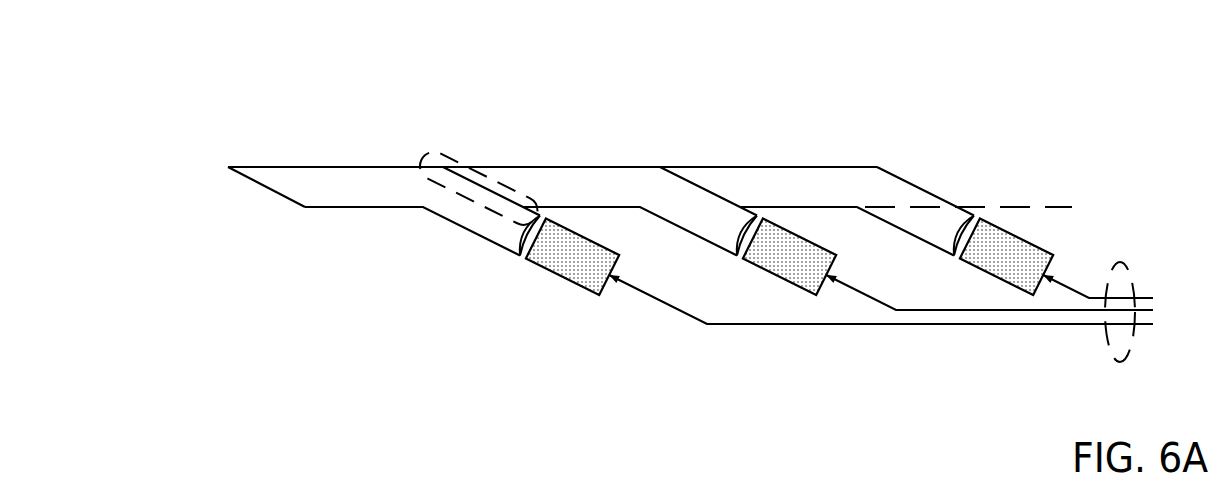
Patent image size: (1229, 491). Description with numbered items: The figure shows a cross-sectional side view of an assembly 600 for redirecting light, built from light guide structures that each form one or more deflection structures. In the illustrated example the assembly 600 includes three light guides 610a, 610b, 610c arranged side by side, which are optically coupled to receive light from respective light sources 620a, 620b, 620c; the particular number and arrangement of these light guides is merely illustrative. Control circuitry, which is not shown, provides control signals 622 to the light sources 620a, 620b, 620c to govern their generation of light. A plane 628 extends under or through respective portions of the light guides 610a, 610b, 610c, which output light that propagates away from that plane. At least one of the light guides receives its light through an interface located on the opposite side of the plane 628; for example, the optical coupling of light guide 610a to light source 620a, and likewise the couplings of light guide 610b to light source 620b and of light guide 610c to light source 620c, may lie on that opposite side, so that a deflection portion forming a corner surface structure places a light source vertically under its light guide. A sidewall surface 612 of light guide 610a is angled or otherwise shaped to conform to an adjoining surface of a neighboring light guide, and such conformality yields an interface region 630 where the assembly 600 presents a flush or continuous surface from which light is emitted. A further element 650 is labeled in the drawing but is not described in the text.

The assembly 600 is at (198, 108).
The sidewall surface 612 is at (261, 189).
The light guide 610a is at (387, 197).
The light guide 610b is at (604, 197).
The light guide 610c is at (817, 197).
The plane 628 is at (1037, 205).
The region 630 is at (440, 152).
The light source 620a is at (605, 273).
The light source 620b is at (820, 273).
The light source 620c is at (1032, 273).
The control signals 622 is at (1120, 360).
The adjacent component (off sheet) 650 is at (198, 490).